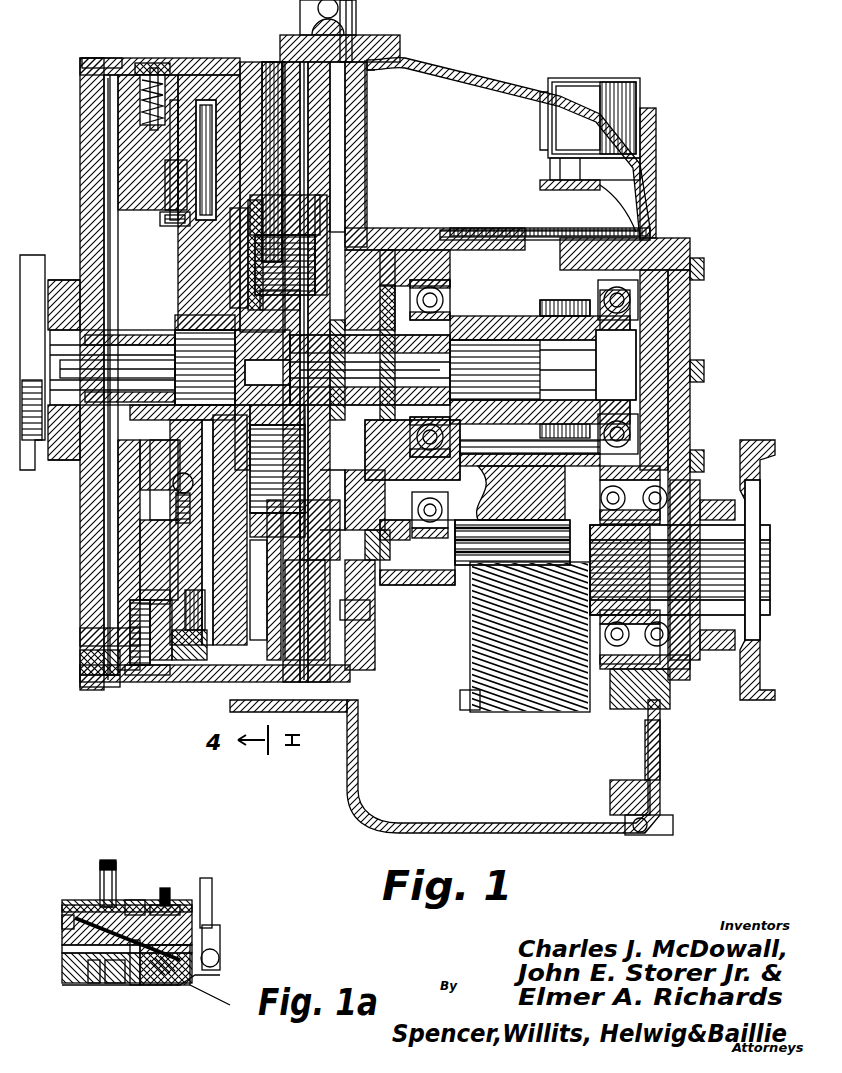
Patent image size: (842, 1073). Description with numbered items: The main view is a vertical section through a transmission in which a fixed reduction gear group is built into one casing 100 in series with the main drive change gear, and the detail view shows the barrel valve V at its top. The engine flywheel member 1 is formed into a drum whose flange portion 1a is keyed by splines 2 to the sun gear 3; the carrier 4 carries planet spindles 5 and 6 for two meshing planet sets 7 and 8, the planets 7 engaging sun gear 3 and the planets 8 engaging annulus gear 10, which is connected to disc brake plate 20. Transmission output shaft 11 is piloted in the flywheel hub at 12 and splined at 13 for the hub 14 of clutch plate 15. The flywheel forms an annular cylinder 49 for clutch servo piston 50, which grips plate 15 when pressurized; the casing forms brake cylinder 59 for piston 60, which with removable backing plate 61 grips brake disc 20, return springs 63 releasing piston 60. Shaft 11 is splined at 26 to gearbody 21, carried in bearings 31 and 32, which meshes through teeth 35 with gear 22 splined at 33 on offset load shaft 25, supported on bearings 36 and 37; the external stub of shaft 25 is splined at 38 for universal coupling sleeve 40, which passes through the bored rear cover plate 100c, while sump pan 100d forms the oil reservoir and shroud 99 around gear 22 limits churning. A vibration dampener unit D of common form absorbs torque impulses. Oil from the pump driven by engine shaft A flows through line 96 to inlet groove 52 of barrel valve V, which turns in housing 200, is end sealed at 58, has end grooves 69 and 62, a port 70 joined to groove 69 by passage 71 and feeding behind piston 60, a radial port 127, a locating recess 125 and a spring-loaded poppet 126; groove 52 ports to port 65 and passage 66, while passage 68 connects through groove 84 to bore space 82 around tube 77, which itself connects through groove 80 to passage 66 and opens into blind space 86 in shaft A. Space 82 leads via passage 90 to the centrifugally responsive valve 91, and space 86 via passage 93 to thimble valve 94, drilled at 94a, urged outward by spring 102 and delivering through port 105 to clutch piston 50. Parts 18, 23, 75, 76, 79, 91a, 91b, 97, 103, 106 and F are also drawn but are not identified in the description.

In FIG. 1, the engine flywheel member 1 is at (190, 75).
In FIG. 1, the flange portion 1a is at (240, 62).
In FIG. 1, the splines 2 is at (248, 262).
In FIG. 1, the sun gear 3 is at (262, 296).
In FIG. 1, the carrier 4 is at (290, 335).
In FIG. 1, the planet spindle 5 is at (230, 243).
In FIG. 1, the planet spindle 6 is at (340, 478).
In FIG. 1, the planets 7 is at (270, 548).
In FIG. 1, the planets 8 is at (272, 210).
In FIG. 1, the annulus gear 10 is at (340, 520).
In FIG. 1, the transmission output shaft 11 is at (392, 320).
In FIG. 1, the pilot 12 is at (80, 375).
In FIG. 1, the splines 13 is at (175, 345).
In FIG. 1, the hub 14 is at (170, 318).
In FIG. 1, the clutch plate 15 is at (200, 100).
In FIG. 1, the flywheel hub 18 is at (85, 460).
In FIG. 1, the disc brake plate 20 is at (300, 672).
In FIG. 1, the gear 21 is at (488, 318).
In FIG. 1, the gear 22 is at (500, 472).
In FIG. 1, the coupling 23 is at (560, 300).
In FIG. 1, the offset load shaft 25 is at (610, 545).
In FIG. 1, the splines 26 is at (450, 305).
In FIG. 1, the bearing 31 is at (450, 258).
In FIG. 1, the bearing 32 is at (640, 298).
In FIG. 1, the splines 33 is at (470, 560).
In FIG. 1, the gear teeth 35 is at (600, 480).
In FIG. 1, the bearing 36 is at (412, 512).
In FIG. 1, the bearing 37 is at (660, 476).
In FIG. 1, the splines 38 is at (690, 630).
In FIG. 1, the universal drive coupling sleeve 40 is at (760, 490).
In FIG. 1, the annular cylinder 49 is at (165, 182).
In FIG. 1, the clutch servo piston 50 is at (160, 218).
In FIG. 1, the annular brake cylinder 59 is at (300, 75).
In FIG. 1, the brake piston 60 is at (330, 104).
In FIG. 1A, the brake piston 60 is at (212, 890).
In FIG. 1, the clutch backing plate 61 is at (300, 128).
In FIG. 1, the return springs 63 is at (300, 12).
In FIG. 1, the port 65 is at (352, 10).
In FIG. 1A, the port 65 is at (150, 985).
In FIG. 1, the passage 68 is at (348, 162).
In FIG. 1A, the passage 68 is at (108, 985).
In FIG. 1, the rod 75 is at (462, 262).
In FIG. 1, the collar 76 is at (600, 320).
In FIG. 1, the tube 77 is at (90, 360).
In FIG. 1, the bearing retainer 79 is at (362, 620).
In FIG. 1, the groove 80 is at (380, 355).
In FIG. 1, the cylindrical bore space 82 is at (165, 420).
In FIG. 1, the groove 84 is at (410, 428).
In FIG. 1, the blind-end cylindrical space 86 is at (104, 268).
In FIG. 1, the passage 90 is at (118, 100).
In FIG. 1, the valve 91 is at (143, 63).
In FIG. 1, the spring rod 91a is at (155, 68).
In FIG. 1, the cap 91b is at (118, 62).
In FIG. 1, the passage 93 is at (118, 560).
In FIG. 1, the valve 94 is at (138, 675).
In FIG. 1, the drilled hole 94a is at (85, 628).
In FIG. 1, the seal 97 is at (200, 665).
In FIG. 1, the shroud 99 is at (470, 695).
In FIG. 1, the casing 100 is at (355, 50).
In FIG. 1, the rear cover plate 100c is at (680, 250).
In FIG. 1, the casing sump pan 100d is at (660, 730).
In FIG. 1, the spring 102 is at (176, 500).
In FIG. 1, the spring 103 is at (140, 598).
In FIG. 1, the delivery port 105 is at (172, 675).
In FIG. 1, the fitting 106 is at (80, 660).
In FIG. 1, the engine shaft A is at (33, 255).
In FIG. 1, the vibration dampener unit D is at (168, 462).
In FIG. 1, the filter F is at (640, 100).
In FIG. 1, the housing 200 is at (380, 38).
In FIG. 1A, the housing 200 is at (165, 905).
In FIG. 1A, the inlet groove 52 is at (100, 900).
In FIG. 1A, the end seal 58 is at (192, 960).
In FIG. 1A, the end groove 62 is at (172, 900).
In FIG. 1A, the passage 66 is at (128, 985).
In FIG. 1A, the end groove 69 is at (62, 902).
In FIG. 1A, the port 70 is at (82, 983).
In FIG. 1A, the passage 71 is at (130, 955).
In FIG. 1A, the line 96 is at (110, 860).
In FIG. 1A, the recess 125 is at (135, 900).
In FIG. 1A, the spring-loaded poppet 126 is at (176, 985).
In FIG. 1A, the radial port 127 is at (130, 938).
In FIG. 1A, the barrel valve V is at (222, 940).